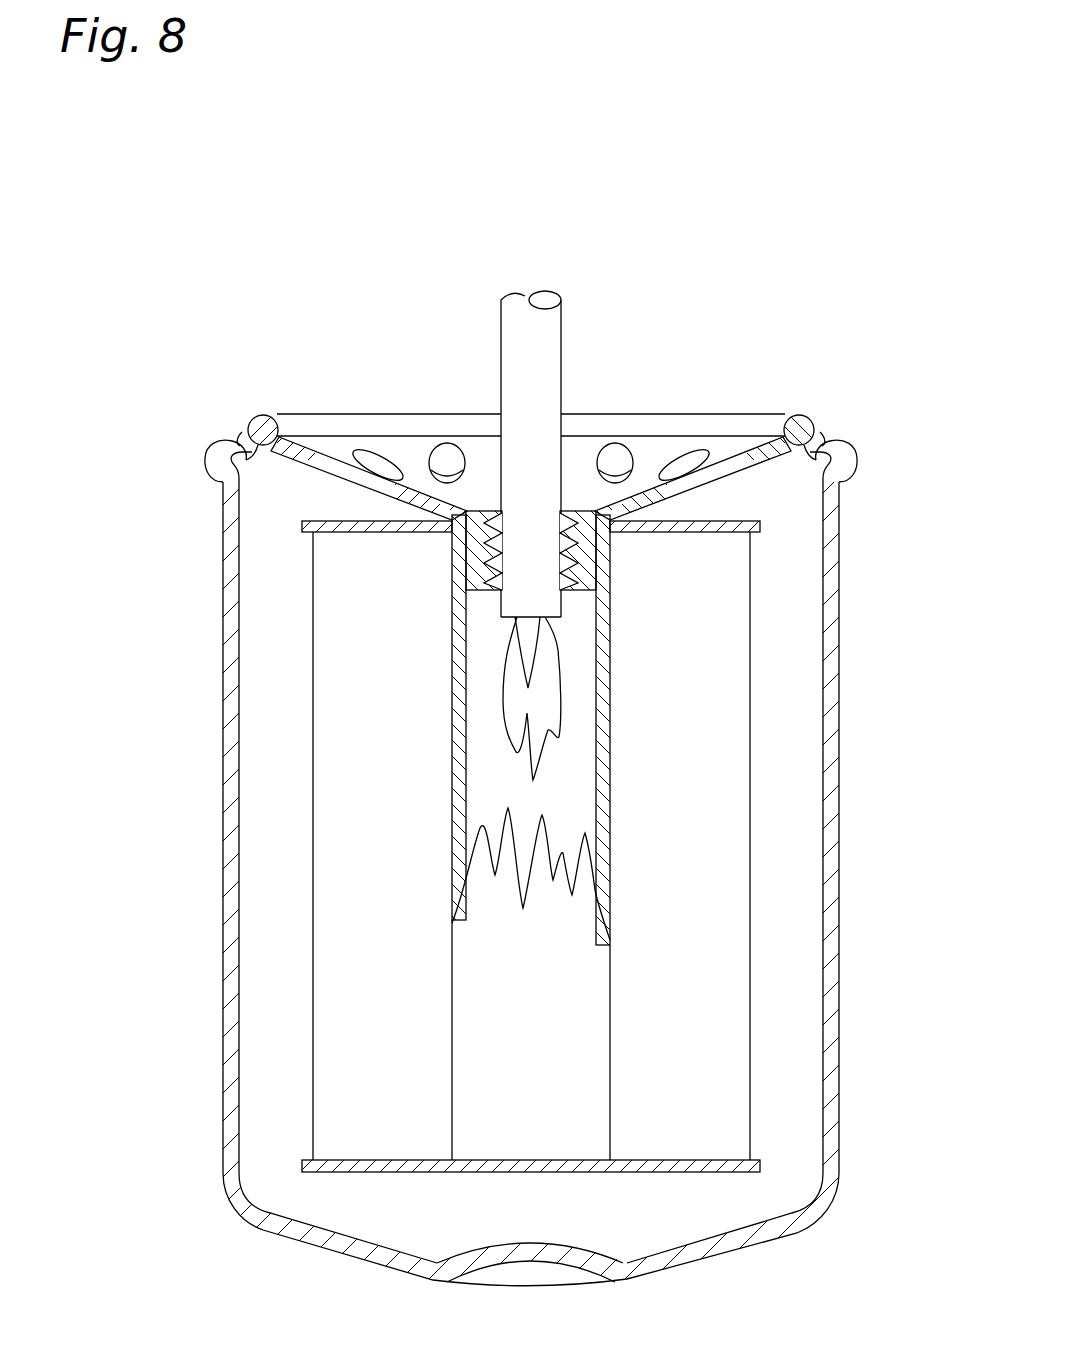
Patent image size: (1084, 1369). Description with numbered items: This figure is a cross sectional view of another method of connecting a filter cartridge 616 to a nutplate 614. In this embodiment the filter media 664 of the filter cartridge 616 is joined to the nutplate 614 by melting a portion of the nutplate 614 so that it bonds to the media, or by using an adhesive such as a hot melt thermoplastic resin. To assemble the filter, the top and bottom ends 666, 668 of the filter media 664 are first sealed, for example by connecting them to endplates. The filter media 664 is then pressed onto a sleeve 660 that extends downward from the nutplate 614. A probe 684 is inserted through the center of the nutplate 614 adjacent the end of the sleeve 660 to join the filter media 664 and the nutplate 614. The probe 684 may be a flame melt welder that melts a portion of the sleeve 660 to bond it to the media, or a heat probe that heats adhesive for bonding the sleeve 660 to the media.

The nutplate 614 is at (680, 413).
The filter cartridge 616 is at (752, 690).
The sleeve 660 is at (613, 612).
The filter media 664 is at (313, 682).
The top end of the filter media 666 is at (333, 520).
The bottom end of the filter media 668 is at (352, 1173).
The probe 684 is at (563, 348).